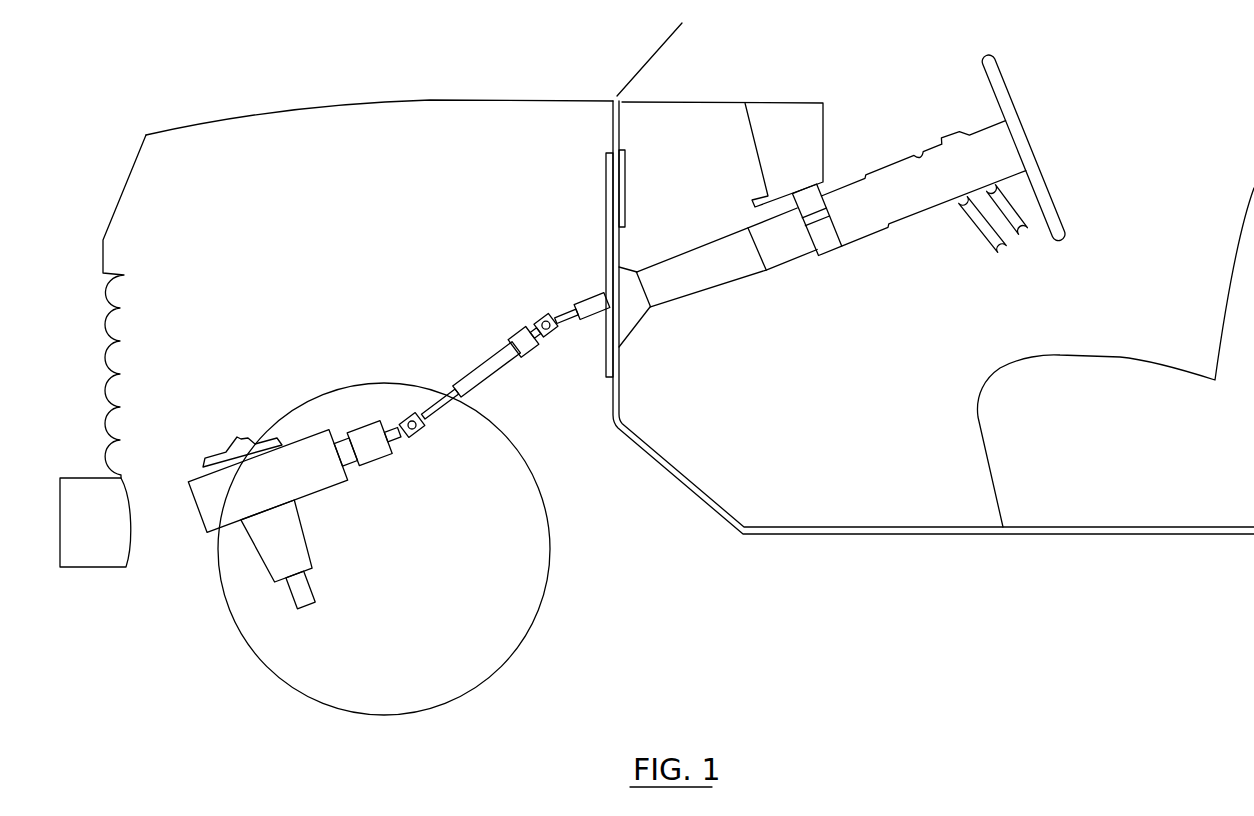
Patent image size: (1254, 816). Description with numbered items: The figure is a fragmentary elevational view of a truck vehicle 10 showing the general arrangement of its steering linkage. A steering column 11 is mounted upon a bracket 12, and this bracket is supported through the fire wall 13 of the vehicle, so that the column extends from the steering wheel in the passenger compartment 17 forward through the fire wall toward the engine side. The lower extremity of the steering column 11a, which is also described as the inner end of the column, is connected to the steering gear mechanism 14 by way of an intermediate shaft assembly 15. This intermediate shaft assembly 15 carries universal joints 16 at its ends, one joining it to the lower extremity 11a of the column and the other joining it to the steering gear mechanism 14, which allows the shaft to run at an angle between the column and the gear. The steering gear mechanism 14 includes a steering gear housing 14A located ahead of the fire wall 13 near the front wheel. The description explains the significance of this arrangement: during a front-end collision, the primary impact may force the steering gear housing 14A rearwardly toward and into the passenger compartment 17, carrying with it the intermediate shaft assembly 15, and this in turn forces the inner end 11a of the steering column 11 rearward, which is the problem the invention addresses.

The truck vehicle 10 is at (410, 102).
The steering column 11 is at (863, 238).
The lower extremity of the steering column 11a is at (563, 312).
The bracket 12 is at (641, 322).
The fire wall 13 is at (606, 208).
The steering gear mechanism 14 is at (308, 535).
The steering gear housing 14A is at (330, 482).
The intermediate shaft assembly 15 is at (478, 358).
The universal joints 16 is at (551, 337).
The passenger compartment 17 is at (780, 411).